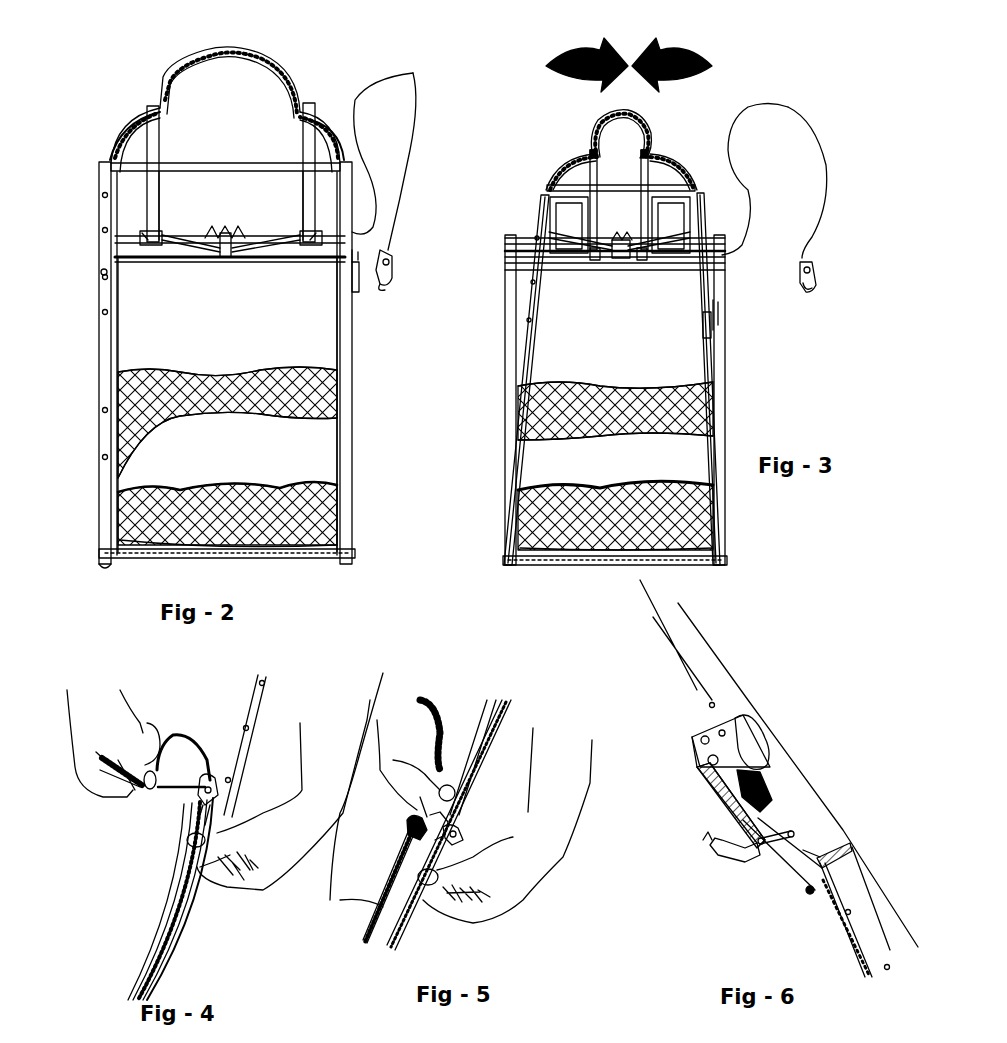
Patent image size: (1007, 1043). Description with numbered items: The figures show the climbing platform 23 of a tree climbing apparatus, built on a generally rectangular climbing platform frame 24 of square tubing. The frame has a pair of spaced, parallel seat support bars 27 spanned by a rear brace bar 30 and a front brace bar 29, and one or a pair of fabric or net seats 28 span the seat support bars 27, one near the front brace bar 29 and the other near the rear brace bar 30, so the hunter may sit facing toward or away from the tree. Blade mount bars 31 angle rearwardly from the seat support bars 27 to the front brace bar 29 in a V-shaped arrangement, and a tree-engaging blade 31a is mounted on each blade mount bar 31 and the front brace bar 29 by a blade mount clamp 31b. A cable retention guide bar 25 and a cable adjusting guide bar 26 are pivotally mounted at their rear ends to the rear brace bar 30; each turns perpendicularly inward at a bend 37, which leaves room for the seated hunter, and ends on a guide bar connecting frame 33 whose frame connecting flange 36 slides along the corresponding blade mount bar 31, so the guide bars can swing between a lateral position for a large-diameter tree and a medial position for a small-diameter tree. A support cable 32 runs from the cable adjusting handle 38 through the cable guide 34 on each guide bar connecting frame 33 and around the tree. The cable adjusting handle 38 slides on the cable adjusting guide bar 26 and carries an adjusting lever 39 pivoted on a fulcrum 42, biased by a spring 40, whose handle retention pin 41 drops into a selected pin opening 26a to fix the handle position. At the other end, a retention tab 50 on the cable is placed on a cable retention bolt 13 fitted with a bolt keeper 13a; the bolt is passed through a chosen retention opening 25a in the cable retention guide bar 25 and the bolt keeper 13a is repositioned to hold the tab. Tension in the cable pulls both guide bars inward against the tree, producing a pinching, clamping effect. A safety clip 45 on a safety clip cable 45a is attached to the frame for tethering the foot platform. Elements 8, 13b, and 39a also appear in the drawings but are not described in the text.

In FIG. 3, the hand grip 8 is at (552, 190).
In FIG. 4, the cable retention bolt 13 is at (190, 800).
In FIG. 5, the cable retention bolt 13 is at (463, 837).
In FIG. 4, the bolt keeper 13a is at (190, 735).
In FIG. 5, the bolt keeper 13a is at (407, 823).
In FIG. 2, the fastener hole 13b is at (100, 272).
In FIG. 2, the climbing platform 23 is at (31, 286).
In FIG. 3, the climbing platform 23 is at (499, 200).
In FIG. 2, the climbing platform frame 24 is at (90, 505).
In FIG. 3, the climbing platform frame 24 is at (504, 349).
In FIG. 2, the cable retention guide bar 25 is at (100, 322).
In FIG. 3, the cable retention guide bar 25 is at (532, 340).
In FIG. 4, the cable retention guide bar 25 is at (240, 705).
In FIG. 5, the cable retention guide bar 25 is at (473, 727).
In FIG. 2, the retention openings 25a is at (100, 195).
In FIG. 3, the retention openings 25a is at (532, 318).
In FIG. 4, the retention openings 25a is at (258, 725).
In FIG. 5, the retention openings 25a is at (498, 745).
In FIG. 2, the cable adjusting guide bar 26 is at (352, 338).
In FIG. 3, the cable adjusting guide bar 26 is at (700, 370).
In FIG. 6, the cable adjusting guide bar 26 is at (708, 675).
In FIG. 6, the pin openings 26a is at (708, 705).
In FIG. 2, the seat support bars 27 is at (118, 358).
In FIG. 3, the seat support bars 27 is at (508, 390).
In FIG. 2, the seats 28 is at (222, 500).
In FIG. 3, the seats 28 is at (618, 490).
In FIG. 3, the front brace bar 29 is at (540, 245).
In FIG. 2, the rear brace bar 30 is at (310, 555).
In FIG. 3, the rear brace bar 30 is at (605, 565).
In FIG. 2, the blade mount bars 31 is at (182, 238).
In FIG. 3, the blade mount bars 31 is at (535, 230).
In FIG. 2, the tree-engaging blade 31a is at (225, 235).
In FIG. 3, the tree-engaging blade 31a is at (634, 205).
In FIG. 2, the blade mount clamp 31b is at (225, 258).
In FIG. 2, the support cable 32 is at (150, 80).
In FIG. 3, the support cable 32 is at (621, 134).
In FIG. 4, the support cable 32 is at (165, 935).
In FIG. 5, the support cable 32 is at (360, 912).
In FIG. 6, the support cable 32 is at (827, 923).
In FIG. 2, the guide bar connecting frame 33 is at (160, 185).
In FIG. 3, the guide bar connecting frame 33 is at (620, 225).
In FIG. 2, the cable guide 34 is at (148, 112).
In FIG. 3, the cable guide 34 is at (588, 155).
In FIG. 2, the frame connecting flange 36 is at (155, 248).
In FIG. 3, the frame connecting flange 36 is at (598, 262).
In FIG. 2, the bend 37 is at (100, 165).
In FIG. 3, the bend 37 is at (700, 195).
In FIG. 2, the cable adjusting handle 38 is at (364, 295).
In FIG. 3, the cable adjusting handle 38 is at (695, 330).
In FIG. 6, the cable adjusting handle 38 is at (806, 748).
In FIG. 2, the adjusting lever 39 is at (375, 280).
In FIG. 3, the adjusting lever 39 is at (726, 322).
In FIG. 6, the adjusting lever 39 is at (738, 862).
In FIG. 6, the pin 39a is at (770, 848).
In FIG. 6, the spring 40 is at (772, 782).
In FIG. 6, the handle retention pin 41 is at (735, 740).
In FIG. 6, the fulcrum 42 is at (705, 788).
In FIG. 2, the safety clip 45 is at (392, 265).
In FIG. 3, the safety clip 45 is at (818, 283).
In FIG. 2, the safety clip cable 45a is at (424, 70).
In FIG. 3, the safety clip cable 45a is at (788, 107).
In FIG. 4, the retention tab 50 is at (187, 842).
In FIG. 5, the retention tab 50 is at (418, 877).